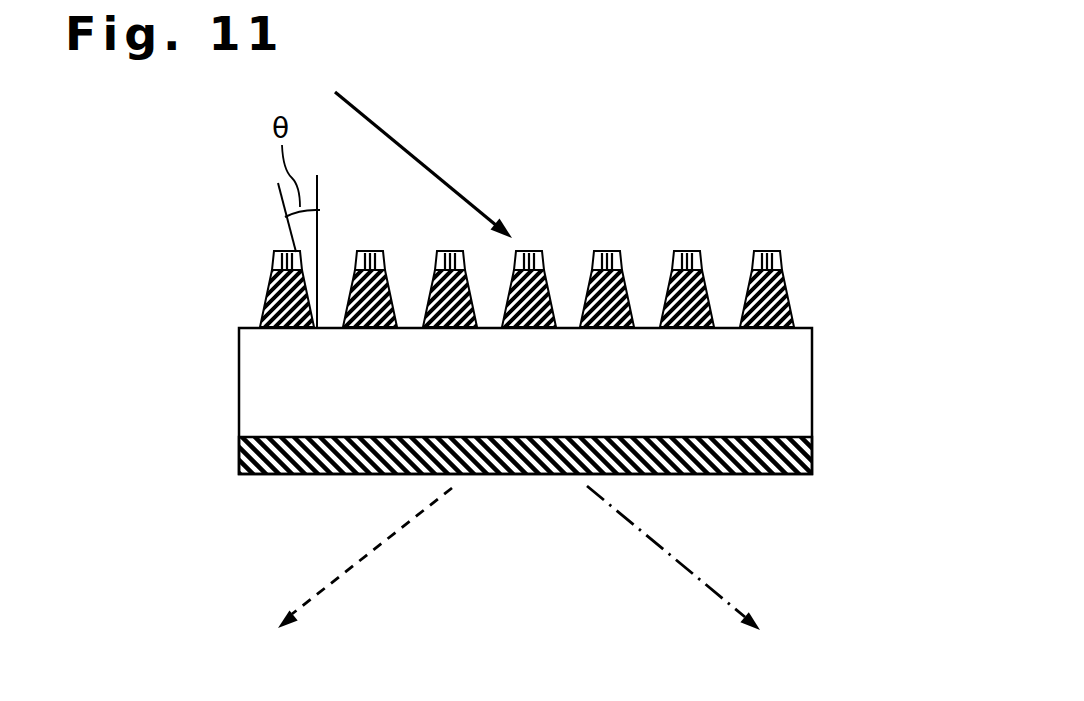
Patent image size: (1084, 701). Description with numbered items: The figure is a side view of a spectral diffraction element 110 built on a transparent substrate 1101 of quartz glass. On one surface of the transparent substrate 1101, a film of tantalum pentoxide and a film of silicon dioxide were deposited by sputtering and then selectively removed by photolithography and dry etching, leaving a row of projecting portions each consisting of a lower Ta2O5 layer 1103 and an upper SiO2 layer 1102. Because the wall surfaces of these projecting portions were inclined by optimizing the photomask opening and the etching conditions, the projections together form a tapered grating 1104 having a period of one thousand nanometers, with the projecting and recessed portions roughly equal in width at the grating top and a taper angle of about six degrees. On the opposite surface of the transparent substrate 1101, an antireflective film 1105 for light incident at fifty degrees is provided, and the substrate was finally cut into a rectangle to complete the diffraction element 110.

The diffraction element 110 is at (858, 213).
The transparent substrate 1101 is at (262, 385).
The SiO2 layer 1102 is at (607, 252).
The Ta2O5 layer 1103 is at (833, 257).
The tapered grating 1104 is at (481, 252).
The antireflective film 1105 is at (239, 458).